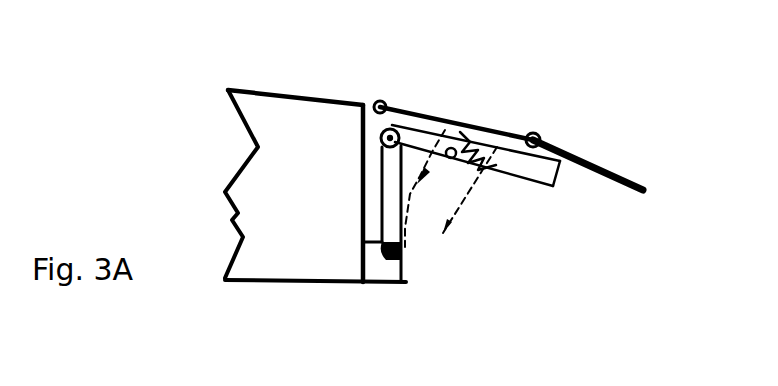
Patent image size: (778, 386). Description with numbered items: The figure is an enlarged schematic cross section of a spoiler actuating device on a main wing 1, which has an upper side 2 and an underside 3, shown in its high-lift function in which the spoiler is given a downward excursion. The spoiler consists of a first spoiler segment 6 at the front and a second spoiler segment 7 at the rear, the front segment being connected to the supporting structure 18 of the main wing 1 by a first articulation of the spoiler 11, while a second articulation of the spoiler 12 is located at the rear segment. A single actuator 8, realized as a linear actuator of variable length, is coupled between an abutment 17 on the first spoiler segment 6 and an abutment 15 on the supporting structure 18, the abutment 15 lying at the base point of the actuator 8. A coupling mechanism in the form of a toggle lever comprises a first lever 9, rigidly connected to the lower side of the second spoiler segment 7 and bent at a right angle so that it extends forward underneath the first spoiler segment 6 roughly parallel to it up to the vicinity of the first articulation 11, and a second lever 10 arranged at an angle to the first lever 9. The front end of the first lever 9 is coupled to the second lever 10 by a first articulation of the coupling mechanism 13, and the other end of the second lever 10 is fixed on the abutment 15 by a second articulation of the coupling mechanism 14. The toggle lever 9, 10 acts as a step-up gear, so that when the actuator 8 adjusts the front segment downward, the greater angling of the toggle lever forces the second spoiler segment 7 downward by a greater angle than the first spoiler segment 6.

The main wing 1 is at (297, 148).
The upper side 2 is at (305, 103).
The underside 3 is at (277, 283).
The first spoiler segment 6 is at (462, 126).
The second spoiler segment 7 is at (628, 178).
The actuator 8 is at (437, 201).
The first lever 9 is at (575, 157).
The second lever 10 is at (405, 212).
The first articulation of the spoiler 11 is at (378, 100).
The second articulation of the spoiler 12 is at (540, 133).
The first articulation of the coupling mechanism 13 is at (400, 128).
The second articulation of the coupling mechanism 14 is at (402, 260).
The abutment 15 is at (403, 284).
The abutment 17 is at (498, 131).
The supporting structure 18 is at (357, 282).